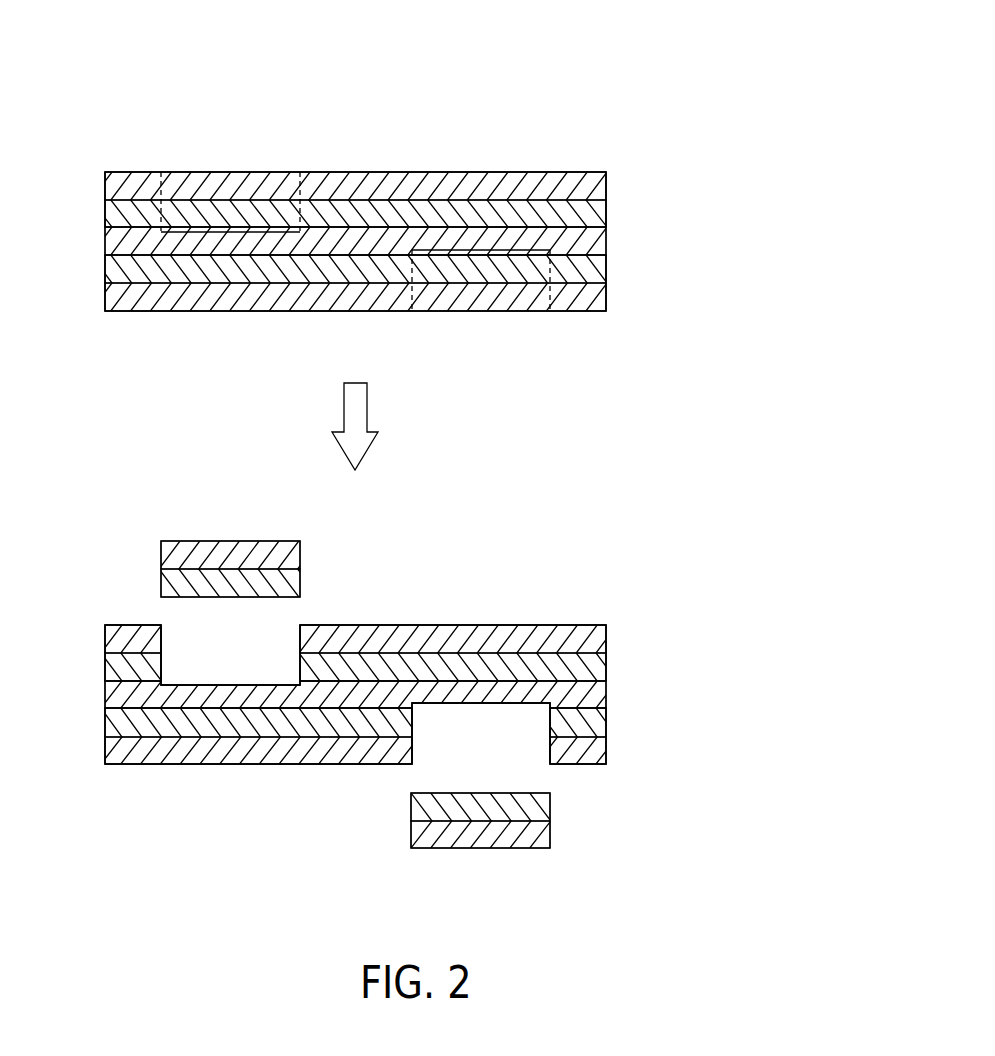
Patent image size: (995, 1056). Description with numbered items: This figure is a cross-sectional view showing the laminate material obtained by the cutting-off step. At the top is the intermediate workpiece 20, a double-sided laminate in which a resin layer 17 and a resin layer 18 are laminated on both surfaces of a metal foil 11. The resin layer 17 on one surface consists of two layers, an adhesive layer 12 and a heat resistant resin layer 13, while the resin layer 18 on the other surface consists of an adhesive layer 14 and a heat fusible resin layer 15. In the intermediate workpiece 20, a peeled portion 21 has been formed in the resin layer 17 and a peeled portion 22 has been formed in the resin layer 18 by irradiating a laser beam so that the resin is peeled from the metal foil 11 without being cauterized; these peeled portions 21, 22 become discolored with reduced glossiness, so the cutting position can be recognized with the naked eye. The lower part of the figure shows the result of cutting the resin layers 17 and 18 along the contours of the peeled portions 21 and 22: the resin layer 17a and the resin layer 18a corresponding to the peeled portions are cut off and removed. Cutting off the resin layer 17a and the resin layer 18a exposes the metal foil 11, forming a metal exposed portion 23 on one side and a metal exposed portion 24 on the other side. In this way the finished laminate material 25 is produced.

The metal foil 11 is at (592, 244).
The adhesive layer 12 is at (588, 213).
The heat resistant resin layer 13 is at (590, 183).
The adhesive layer 14 is at (592, 263).
The heat fusible resin layer 15 is at (592, 294).
The resin layer 17 is at (705, 145).
The resin layer 17a is at (392, 525).
The resin layer 18 is at (705, 250).
The resin layer 18a is at (323, 790).
The intermediate workpiece 20 is at (605, 140).
The peeled portion 21 is at (228, 232).
The peeled portion 22 is at (495, 254).
The metal exposed portion 23 is at (218, 685).
The metal exposed portion 24 is at (527, 777).
The laminate material 25 is at (607, 592).